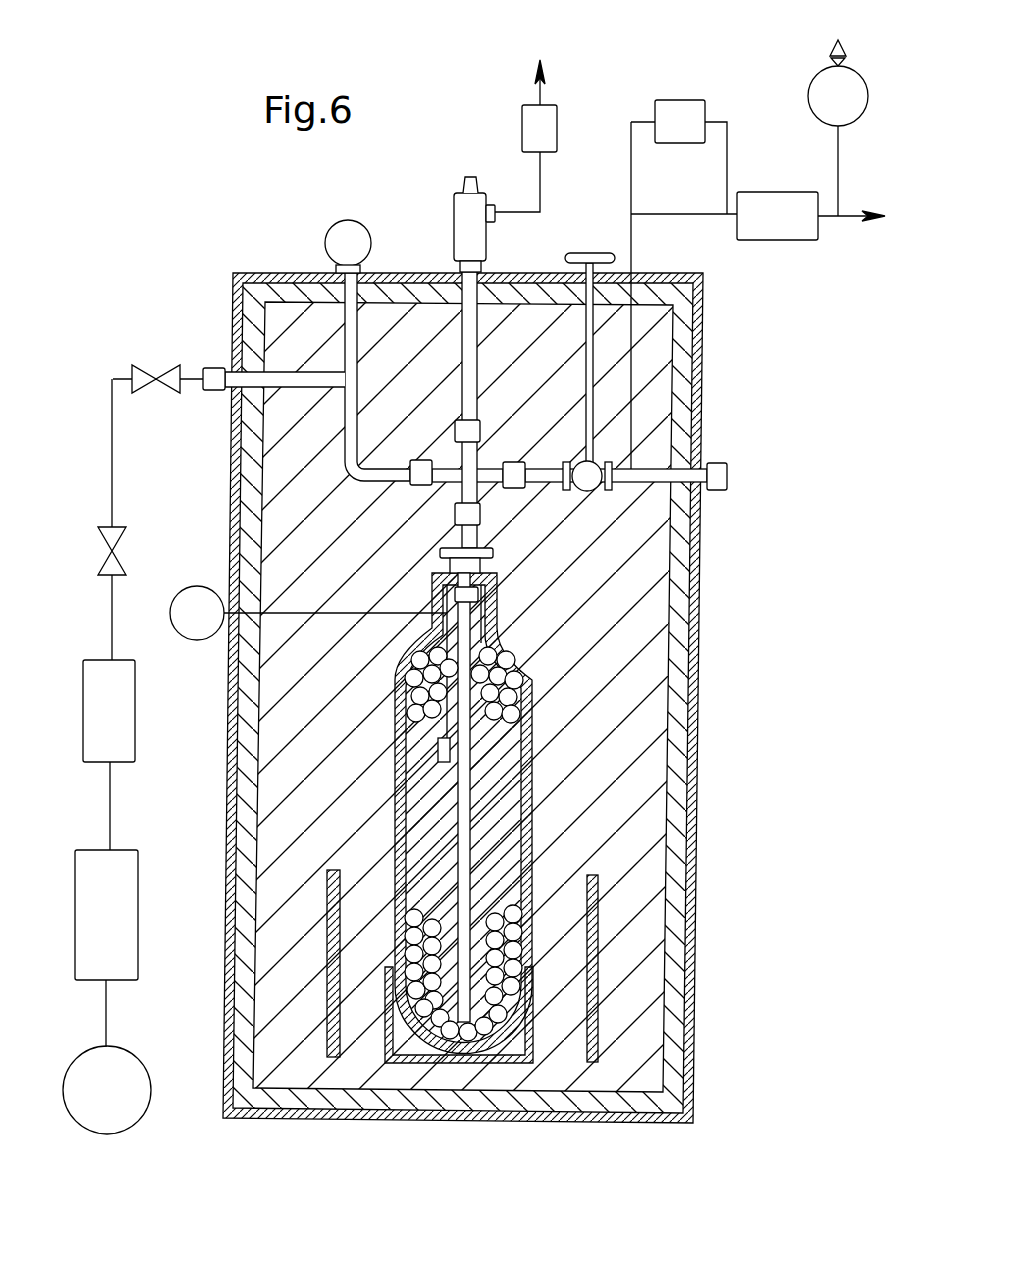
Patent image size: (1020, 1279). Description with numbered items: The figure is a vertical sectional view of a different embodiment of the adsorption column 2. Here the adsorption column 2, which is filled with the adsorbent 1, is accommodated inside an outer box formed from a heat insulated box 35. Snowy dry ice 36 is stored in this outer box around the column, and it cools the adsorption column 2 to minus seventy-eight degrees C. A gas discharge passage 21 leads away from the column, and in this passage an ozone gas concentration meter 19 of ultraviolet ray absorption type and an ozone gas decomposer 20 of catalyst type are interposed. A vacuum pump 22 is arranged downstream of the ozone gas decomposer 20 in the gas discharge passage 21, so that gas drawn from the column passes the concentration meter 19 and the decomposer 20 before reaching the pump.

The adsorbent 1 is at (582, 801).
The adsorption column 2 is at (535, 765).
The ozone gas concentration meter 19 is at (685, 107).
The ozone gas decomposer 20 is at (800, 232).
The gas discharge passage 21 is at (632, 253).
The vacuum pump 22 is at (818, 86).
The heat insulated box 35 is at (698, 897).
The snowy dry ice 36 is at (632, 810).